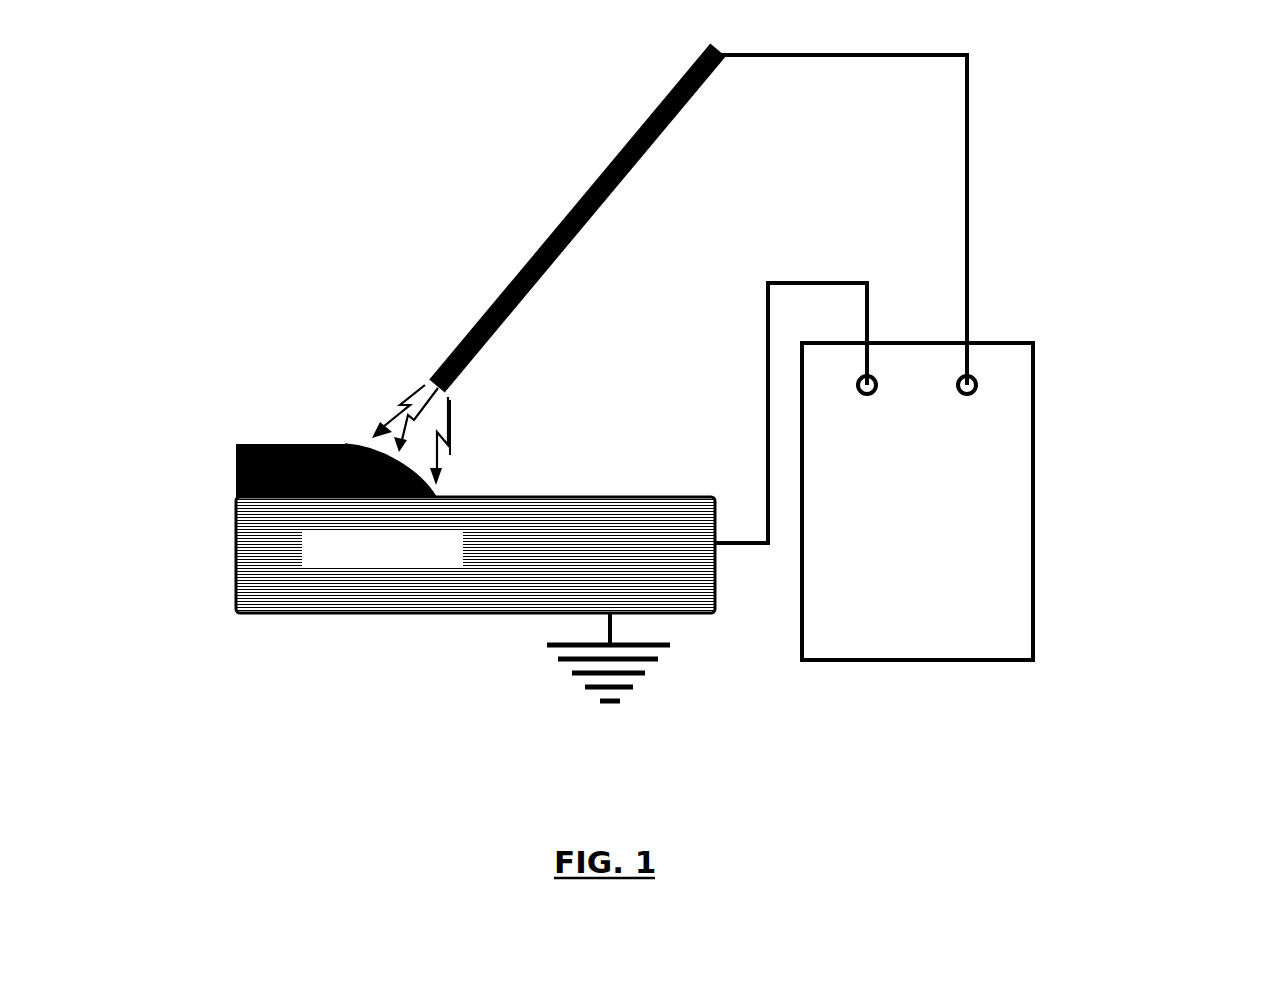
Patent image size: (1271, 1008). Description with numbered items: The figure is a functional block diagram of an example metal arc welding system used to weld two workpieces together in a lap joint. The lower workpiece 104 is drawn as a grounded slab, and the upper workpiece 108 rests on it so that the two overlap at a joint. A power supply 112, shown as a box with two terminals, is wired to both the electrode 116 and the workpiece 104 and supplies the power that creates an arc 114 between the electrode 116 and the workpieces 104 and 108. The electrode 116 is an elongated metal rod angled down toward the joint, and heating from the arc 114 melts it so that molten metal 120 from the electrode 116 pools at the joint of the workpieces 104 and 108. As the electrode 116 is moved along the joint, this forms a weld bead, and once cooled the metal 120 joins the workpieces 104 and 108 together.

The workpiece 104 is at (258, 551).
The workpiece 108 is at (240, 467).
The power supply 112 is at (1035, 446).
The arc 114 is at (466, 433).
The electrode 116 is at (592, 193).
The molten metal 120 is at (350, 445).